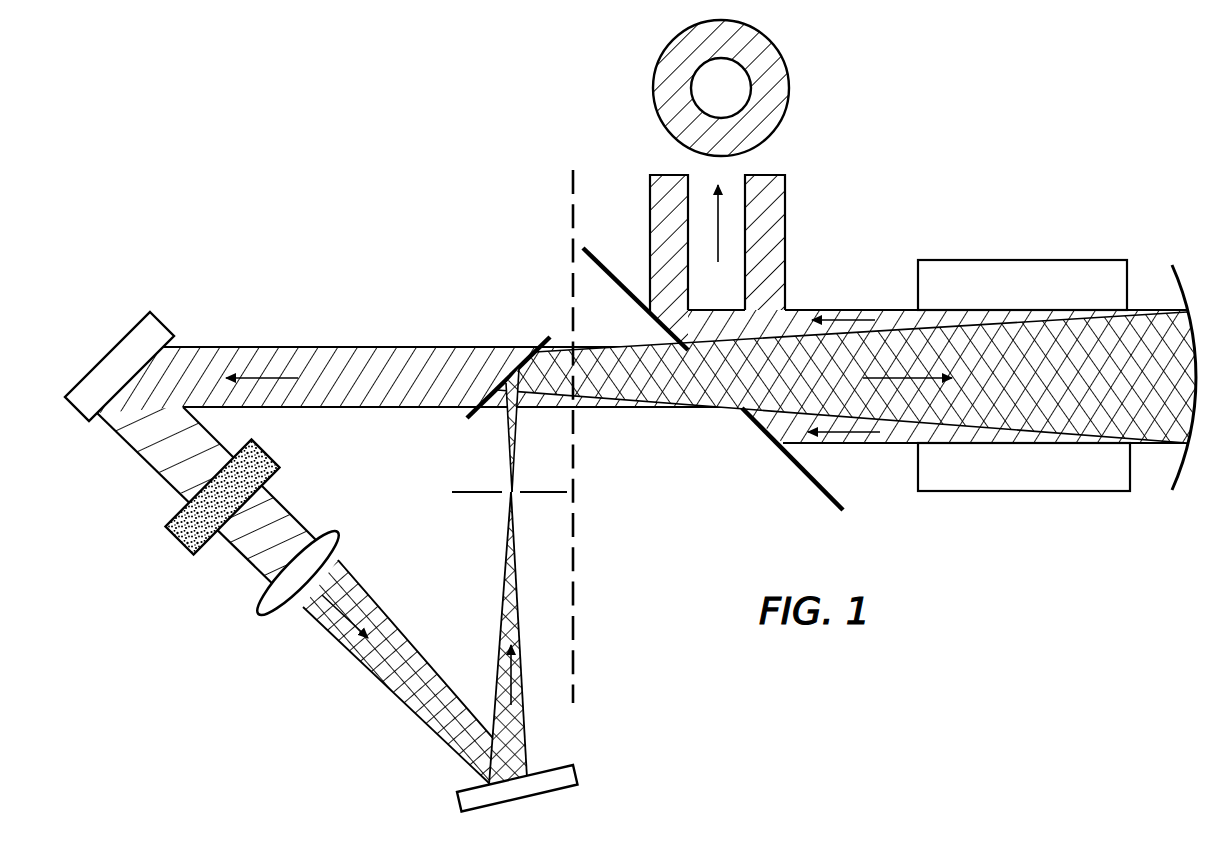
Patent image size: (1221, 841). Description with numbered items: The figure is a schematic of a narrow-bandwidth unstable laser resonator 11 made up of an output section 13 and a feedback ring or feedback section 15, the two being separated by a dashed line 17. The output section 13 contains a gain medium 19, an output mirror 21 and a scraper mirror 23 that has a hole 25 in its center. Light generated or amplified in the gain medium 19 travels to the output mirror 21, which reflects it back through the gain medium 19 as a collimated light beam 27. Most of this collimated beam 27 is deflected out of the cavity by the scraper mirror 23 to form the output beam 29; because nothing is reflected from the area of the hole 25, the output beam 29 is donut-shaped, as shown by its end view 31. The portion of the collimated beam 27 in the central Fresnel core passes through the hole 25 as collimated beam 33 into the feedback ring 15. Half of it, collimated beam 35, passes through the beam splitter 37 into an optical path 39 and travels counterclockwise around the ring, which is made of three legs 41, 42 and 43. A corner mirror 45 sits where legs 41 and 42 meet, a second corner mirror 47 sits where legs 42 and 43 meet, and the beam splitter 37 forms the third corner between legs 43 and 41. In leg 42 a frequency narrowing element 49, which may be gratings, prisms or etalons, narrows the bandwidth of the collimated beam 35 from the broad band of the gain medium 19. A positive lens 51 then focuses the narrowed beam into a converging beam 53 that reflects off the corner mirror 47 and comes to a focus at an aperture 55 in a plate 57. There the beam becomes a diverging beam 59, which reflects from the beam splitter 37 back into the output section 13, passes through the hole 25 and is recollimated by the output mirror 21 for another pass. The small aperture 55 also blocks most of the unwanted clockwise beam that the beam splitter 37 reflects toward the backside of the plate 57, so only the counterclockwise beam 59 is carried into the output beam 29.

The unstable laser resonator 11 is at (386, 84).
The output section 13 is at (1054, 142).
The feedback section 15 is at (386, 237).
The dashed line 17 is at (573, 213).
The gain medium 19 is at (1071, 260).
The output mirror 21 is at (1175, 480).
The scraper mirror 23 is at (845, 505).
The hole 25 is at (705, 382).
The collimated light beam 27 is at (845, 310).
The output beam 29 is at (786, 208).
The end view 31 is at (788, 66).
The collimated beam 33 is at (583, 345).
The collimated beam 35 is at (305, 345).
The beam splitter 37 is at (540, 340).
The optical path 39 is at (226, 345).
The leg 41 is at (365, 410).
The leg 42 is at (310, 515).
The leg 43 is at (490, 568).
The corner mirror 45 is at (105, 357).
The corner mirror 47 is at (568, 768).
The frequency narrowing element 49 is at (178, 543).
The positive lens 51 is at (270, 615).
The converging beam 53 is at (410, 716).
The aperture 55 is at (516, 497).
The plate 57 is at (540, 490).
The diverging beam 59 is at (507, 430).